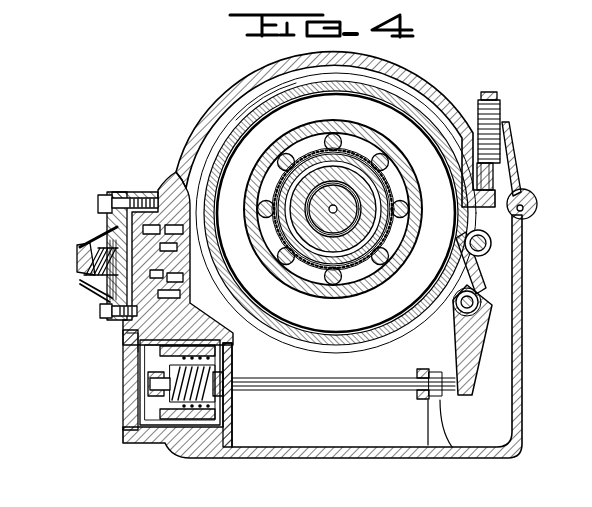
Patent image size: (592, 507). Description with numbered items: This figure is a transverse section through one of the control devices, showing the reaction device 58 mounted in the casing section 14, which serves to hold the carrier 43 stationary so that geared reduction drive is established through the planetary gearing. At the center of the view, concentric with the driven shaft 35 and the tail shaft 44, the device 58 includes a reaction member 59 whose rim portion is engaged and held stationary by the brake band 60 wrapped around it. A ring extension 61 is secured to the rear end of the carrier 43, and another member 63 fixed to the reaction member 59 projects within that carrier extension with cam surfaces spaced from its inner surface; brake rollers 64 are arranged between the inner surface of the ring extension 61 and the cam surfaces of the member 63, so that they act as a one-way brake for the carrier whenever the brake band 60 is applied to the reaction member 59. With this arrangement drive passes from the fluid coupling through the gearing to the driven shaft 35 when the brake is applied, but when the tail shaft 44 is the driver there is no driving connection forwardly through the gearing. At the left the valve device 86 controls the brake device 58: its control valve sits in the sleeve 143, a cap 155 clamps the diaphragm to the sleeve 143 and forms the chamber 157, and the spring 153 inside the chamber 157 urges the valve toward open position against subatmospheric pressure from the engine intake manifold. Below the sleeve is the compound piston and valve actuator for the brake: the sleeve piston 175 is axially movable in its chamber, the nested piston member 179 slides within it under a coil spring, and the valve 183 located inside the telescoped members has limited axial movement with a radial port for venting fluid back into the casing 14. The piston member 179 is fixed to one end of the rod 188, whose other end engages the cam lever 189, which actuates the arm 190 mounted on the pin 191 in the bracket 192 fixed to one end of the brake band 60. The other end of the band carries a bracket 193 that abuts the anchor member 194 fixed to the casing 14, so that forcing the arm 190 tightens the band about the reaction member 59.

The casing section 14 is at (441, 94).
The driven shaft 35 is at (348, 209).
The carrier 43 is at (405, 247).
The tail shaft 44 is at (380, 198).
The reaction device 58 is at (228, 117).
The reaction member 59 is at (276, 134).
The brake band 60 is at (236, 144).
The ring extension 61 is at (347, 121).
The abutment member 63 is at (372, 186).
The brake rollers 64 is at (347, 136).
The valve device 86 is at (105, 326).
The sleeve 143 is at (178, 258).
The spring 153 is at (108, 290).
The cap 155 is at (84, 265).
The chamber 157 is at (112, 229).
The sleeve piston 175 is at (142, 443).
The nested piston member 179 is at (128, 334).
The valve 183 is at (185, 362).
The rod 188 is at (392, 393).
The cam lever 189 is at (472, 372).
The arm 190 is at (493, 277).
The pin 191 is at (490, 250).
The bracket 192 is at (484, 230).
The bracket 193 is at (514, 188).
The anchor member 194 is at (505, 140).